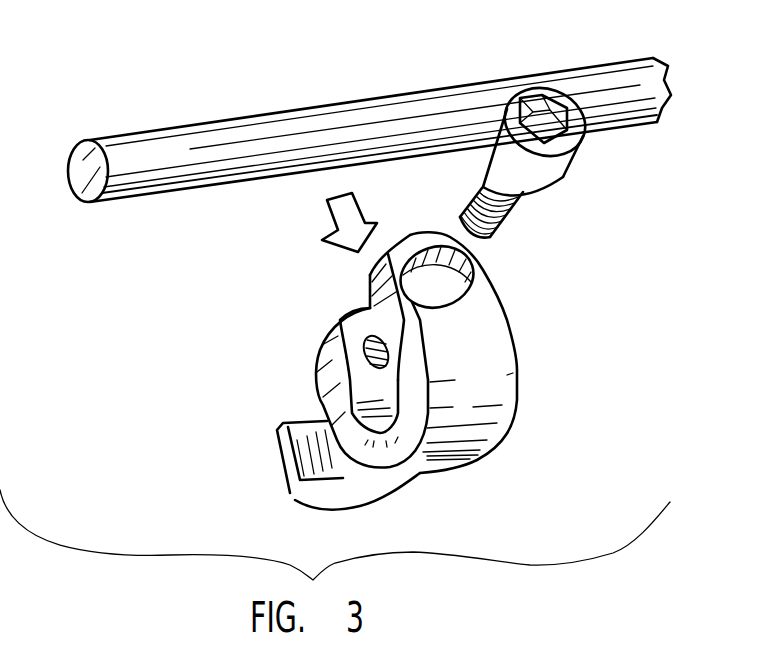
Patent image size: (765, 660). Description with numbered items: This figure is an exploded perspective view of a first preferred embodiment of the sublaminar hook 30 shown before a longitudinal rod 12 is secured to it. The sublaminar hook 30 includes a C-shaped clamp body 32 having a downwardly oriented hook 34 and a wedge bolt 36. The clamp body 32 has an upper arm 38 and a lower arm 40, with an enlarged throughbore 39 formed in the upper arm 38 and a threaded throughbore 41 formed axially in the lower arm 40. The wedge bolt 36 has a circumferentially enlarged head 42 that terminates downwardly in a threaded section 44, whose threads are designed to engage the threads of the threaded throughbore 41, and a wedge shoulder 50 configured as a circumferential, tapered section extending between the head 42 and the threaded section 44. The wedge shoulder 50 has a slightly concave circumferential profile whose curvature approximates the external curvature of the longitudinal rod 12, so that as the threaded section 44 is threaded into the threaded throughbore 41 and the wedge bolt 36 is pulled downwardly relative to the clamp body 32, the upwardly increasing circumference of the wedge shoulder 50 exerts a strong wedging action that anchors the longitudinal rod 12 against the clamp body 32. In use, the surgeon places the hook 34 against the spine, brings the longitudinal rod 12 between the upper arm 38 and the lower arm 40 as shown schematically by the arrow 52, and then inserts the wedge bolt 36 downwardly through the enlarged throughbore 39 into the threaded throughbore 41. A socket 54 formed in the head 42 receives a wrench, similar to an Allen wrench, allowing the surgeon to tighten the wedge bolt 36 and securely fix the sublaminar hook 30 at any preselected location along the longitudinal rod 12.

The longitudinal rod 12 is at (237, 146).
The sublaminar hook 30 is at (461, 383).
The clamp body 32 is at (463, 418).
The hook 34 is at (383, 480).
The wedge bolt 36 is at (538, 133).
The upper arm 38 is at (460, 335).
The enlarged throughbore 39 is at (470, 256).
The lower arm 40 is at (367, 383).
The threaded throughbore 41 is at (368, 330).
The head 42 is at (549, 164).
The threaded section 44 is at (468, 212).
The wedge shoulder 50 is at (513, 189).
The arrow 52 is at (347, 222).
The socket 54 is at (556, 124).